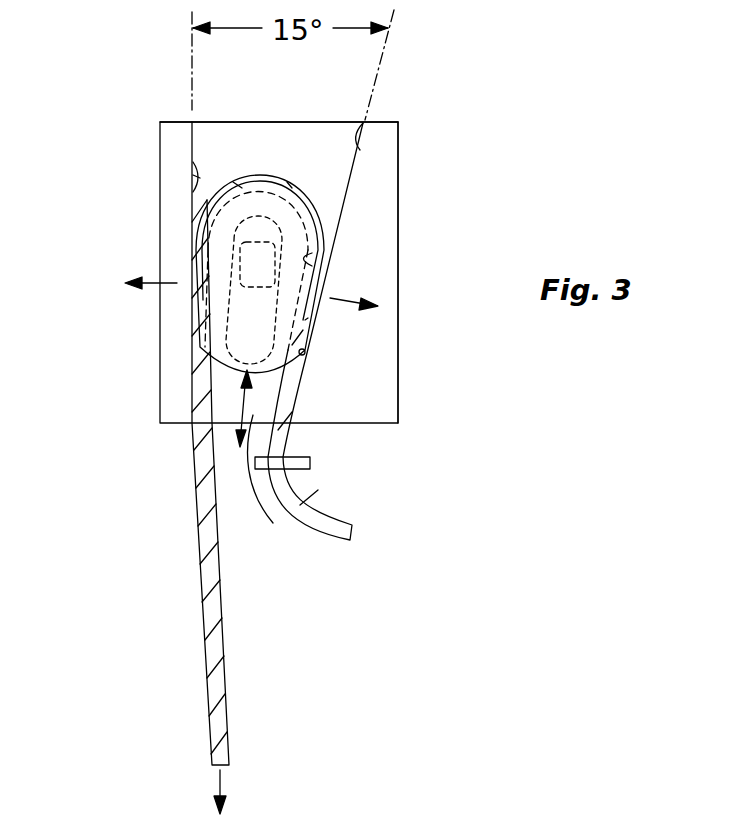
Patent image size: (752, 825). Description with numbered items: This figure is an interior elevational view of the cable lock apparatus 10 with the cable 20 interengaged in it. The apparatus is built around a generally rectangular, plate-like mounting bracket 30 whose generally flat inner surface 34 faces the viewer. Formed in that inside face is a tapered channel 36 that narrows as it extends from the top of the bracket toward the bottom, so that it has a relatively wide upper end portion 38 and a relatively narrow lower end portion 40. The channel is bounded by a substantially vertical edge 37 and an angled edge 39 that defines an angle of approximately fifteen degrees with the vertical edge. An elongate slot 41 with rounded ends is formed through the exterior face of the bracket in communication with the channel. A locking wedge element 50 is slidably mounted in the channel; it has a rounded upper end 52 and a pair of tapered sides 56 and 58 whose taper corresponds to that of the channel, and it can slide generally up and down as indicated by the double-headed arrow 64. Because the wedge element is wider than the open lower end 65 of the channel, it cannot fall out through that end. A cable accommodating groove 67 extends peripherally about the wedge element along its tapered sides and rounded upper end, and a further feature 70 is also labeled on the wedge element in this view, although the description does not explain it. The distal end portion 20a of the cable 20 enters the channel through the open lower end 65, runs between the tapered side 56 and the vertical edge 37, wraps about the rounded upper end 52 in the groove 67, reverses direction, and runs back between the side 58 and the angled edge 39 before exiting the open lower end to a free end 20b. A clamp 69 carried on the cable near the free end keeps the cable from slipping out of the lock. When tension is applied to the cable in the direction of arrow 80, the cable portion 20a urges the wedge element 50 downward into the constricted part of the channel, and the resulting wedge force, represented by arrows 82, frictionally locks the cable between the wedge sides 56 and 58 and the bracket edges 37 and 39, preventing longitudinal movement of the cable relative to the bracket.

The cable lock apparatus 10 is at (398, 364).
The cable 20 is at (286, 443).
The distal end portion of cable 20a is at (200, 562).
The free end of cable 20b is at (352, 527).
The mounting bracket 30 is at (398, 142).
The inner surface of bracket 34 is at (390, 298).
The tapered channel 36 is at (362, 124).
The vertical edge of channel 37 is at (197, 180).
The upper end portion of channel 38 is at (197, 165).
The angled edge of channel 39 is at (305, 352).
The lower end portion of channel 40 is at (265, 392).
The elongate slot 41 is at (258, 215).
The locking wedge element 50 is at (293, 173).
The rounded upper end of wedge element 52 is at (233, 173).
The first tapered side of wedge element 56 is at (200, 250).
The second tapered side of wedge element 58 is at (308, 318).
The double-headed arrow 64 is at (240, 402).
The open lower end of channel 65 is at (273, 488).
The cable accommodating groove 67 is at (312, 262).
The clamp 69 is at (310, 462).
The button 70 is at (272, 244).
The arrow indicating pulling force 80 is at (222, 775).
The arrows representing wedge force 82 is at (166, 283).